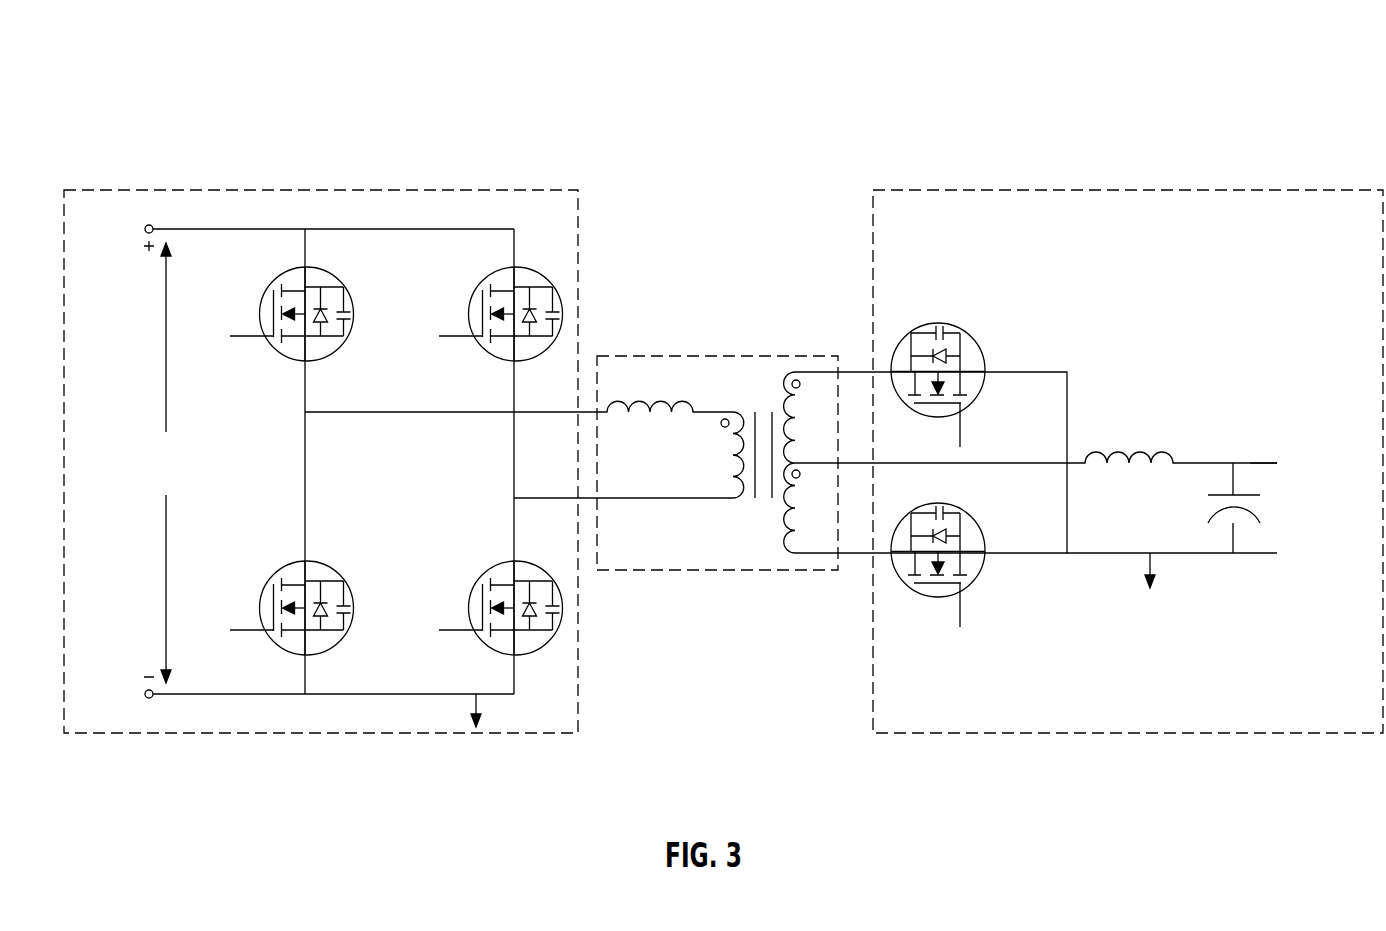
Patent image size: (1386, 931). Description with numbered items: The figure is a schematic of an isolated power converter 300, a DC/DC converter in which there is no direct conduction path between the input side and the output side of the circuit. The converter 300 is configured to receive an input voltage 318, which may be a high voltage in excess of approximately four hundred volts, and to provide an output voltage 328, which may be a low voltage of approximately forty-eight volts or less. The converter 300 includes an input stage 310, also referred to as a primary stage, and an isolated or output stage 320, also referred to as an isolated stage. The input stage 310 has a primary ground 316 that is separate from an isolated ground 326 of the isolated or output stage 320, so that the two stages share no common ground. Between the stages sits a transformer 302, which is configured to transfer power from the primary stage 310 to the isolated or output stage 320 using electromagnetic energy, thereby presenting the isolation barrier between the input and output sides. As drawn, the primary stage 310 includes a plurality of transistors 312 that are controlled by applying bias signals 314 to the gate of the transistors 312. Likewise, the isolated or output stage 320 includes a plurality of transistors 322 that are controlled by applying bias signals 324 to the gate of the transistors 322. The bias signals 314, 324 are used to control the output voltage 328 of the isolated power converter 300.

The isolated power converter 300 is at (120, 68).
The transformer 302 is at (698, 350).
The input stage 310 is at (470, 168).
The transistors 312 is at (265, 290).
The bias signals 314 is at (252, 343).
The primary ground 316 is at (469, 701).
The input voltage 318 is at (60, 460).
The isolated or output stage 320 is at (995, 168).
The transistors 322 is at (981, 336).
The bias signals 324 is at (966, 432).
The isolated ground 326 is at (1158, 564).
The output voltage 328 is at (1282, 469).